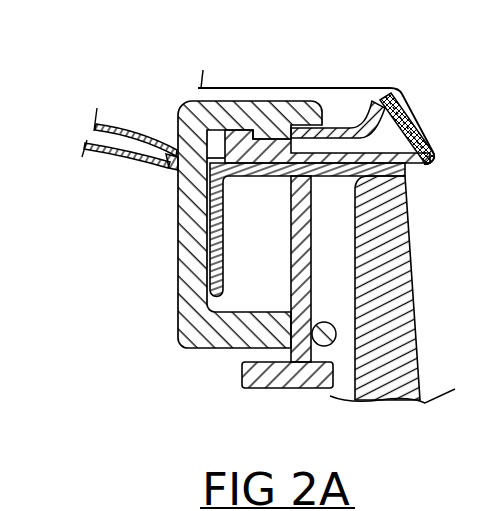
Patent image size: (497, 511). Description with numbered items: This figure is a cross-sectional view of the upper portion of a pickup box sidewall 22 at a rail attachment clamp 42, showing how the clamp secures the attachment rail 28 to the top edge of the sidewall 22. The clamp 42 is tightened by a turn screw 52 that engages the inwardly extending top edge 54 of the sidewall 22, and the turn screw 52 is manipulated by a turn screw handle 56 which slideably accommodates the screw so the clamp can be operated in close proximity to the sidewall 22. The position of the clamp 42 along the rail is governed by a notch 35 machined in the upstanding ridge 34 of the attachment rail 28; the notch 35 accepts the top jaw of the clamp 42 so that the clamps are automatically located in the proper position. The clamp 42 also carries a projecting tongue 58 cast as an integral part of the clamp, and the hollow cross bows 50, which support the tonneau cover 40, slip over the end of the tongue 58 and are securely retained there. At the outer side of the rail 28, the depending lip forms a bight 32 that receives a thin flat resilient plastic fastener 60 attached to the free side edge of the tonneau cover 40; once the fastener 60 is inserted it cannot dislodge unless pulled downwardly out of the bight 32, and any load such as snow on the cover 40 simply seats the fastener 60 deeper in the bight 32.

The sidewall 22 is at (419, 280).
The attachment rail 28 is at (405, 164).
The bight 32 is at (411, 103).
The upstanding ridge 34 is at (300, 128).
The notch 35 is at (289, 131).
The tonneau cover 40 is at (368, 89).
The rail attachment clamp 42 is at (187, 243).
The cross bows 50 is at (113, 127).
The turn screw 52 is at (292, 250).
The inwardly extending top edge 54 is at (288, 158).
The turn screw handle 56 is at (246, 376).
The projecting tongue 58 is at (176, 163).
The plastic fastener 60 is at (424, 147).